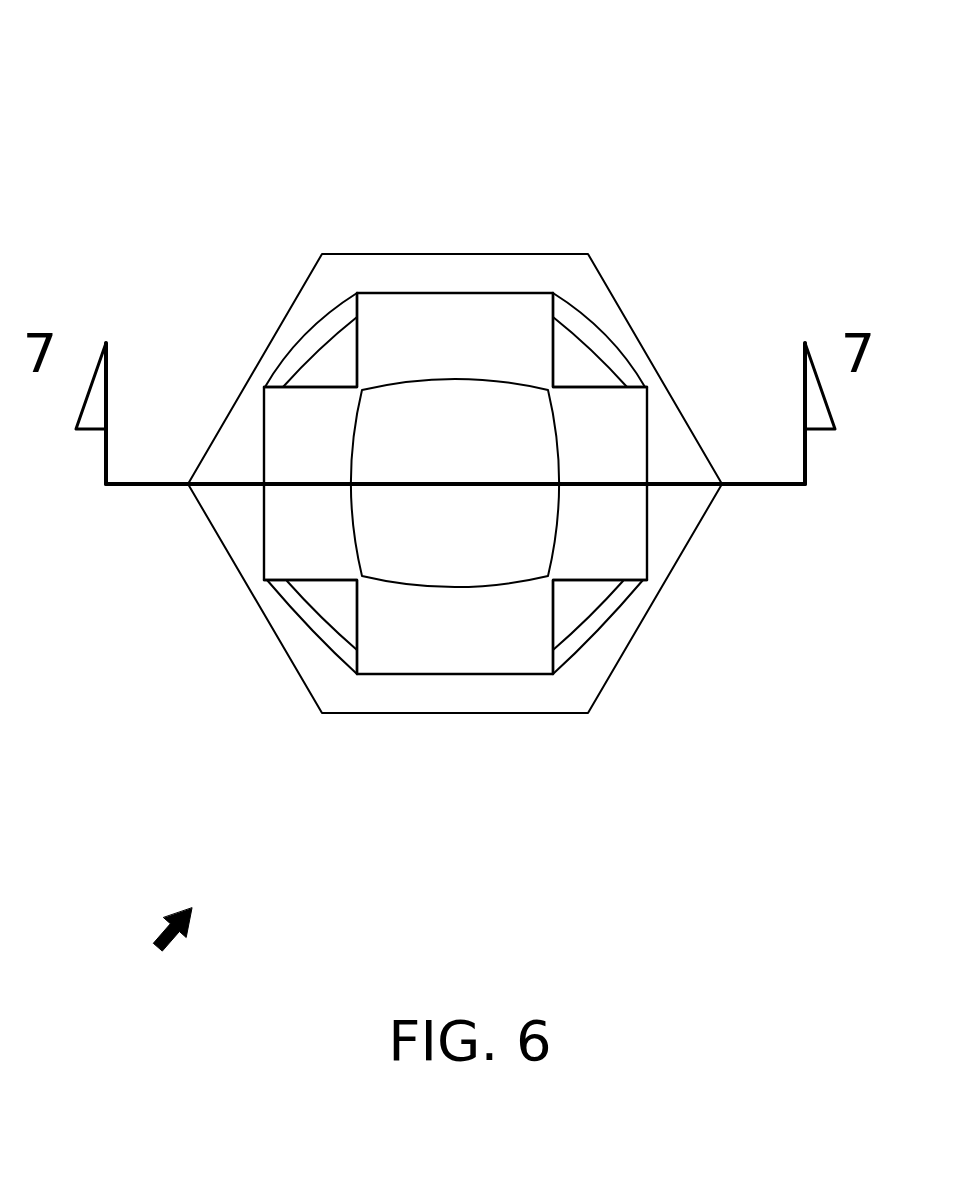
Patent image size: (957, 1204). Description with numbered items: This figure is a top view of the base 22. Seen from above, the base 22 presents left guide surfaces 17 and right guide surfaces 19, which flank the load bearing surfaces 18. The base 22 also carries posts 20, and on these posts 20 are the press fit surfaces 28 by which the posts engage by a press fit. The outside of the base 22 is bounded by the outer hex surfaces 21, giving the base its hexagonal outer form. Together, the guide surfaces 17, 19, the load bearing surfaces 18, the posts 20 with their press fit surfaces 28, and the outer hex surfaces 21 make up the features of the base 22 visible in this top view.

The left guide surface 17 is at (362, 340).
The load bearing surface 18 is at (470, 316).
The right guide surface 19 is at (550, 347).
The post 20 is at (335, 365).
The outer hex surface 21 is at (447, 254).
The base 22 is at (151, 954).
The press fit surface 28 is at (335, 306).